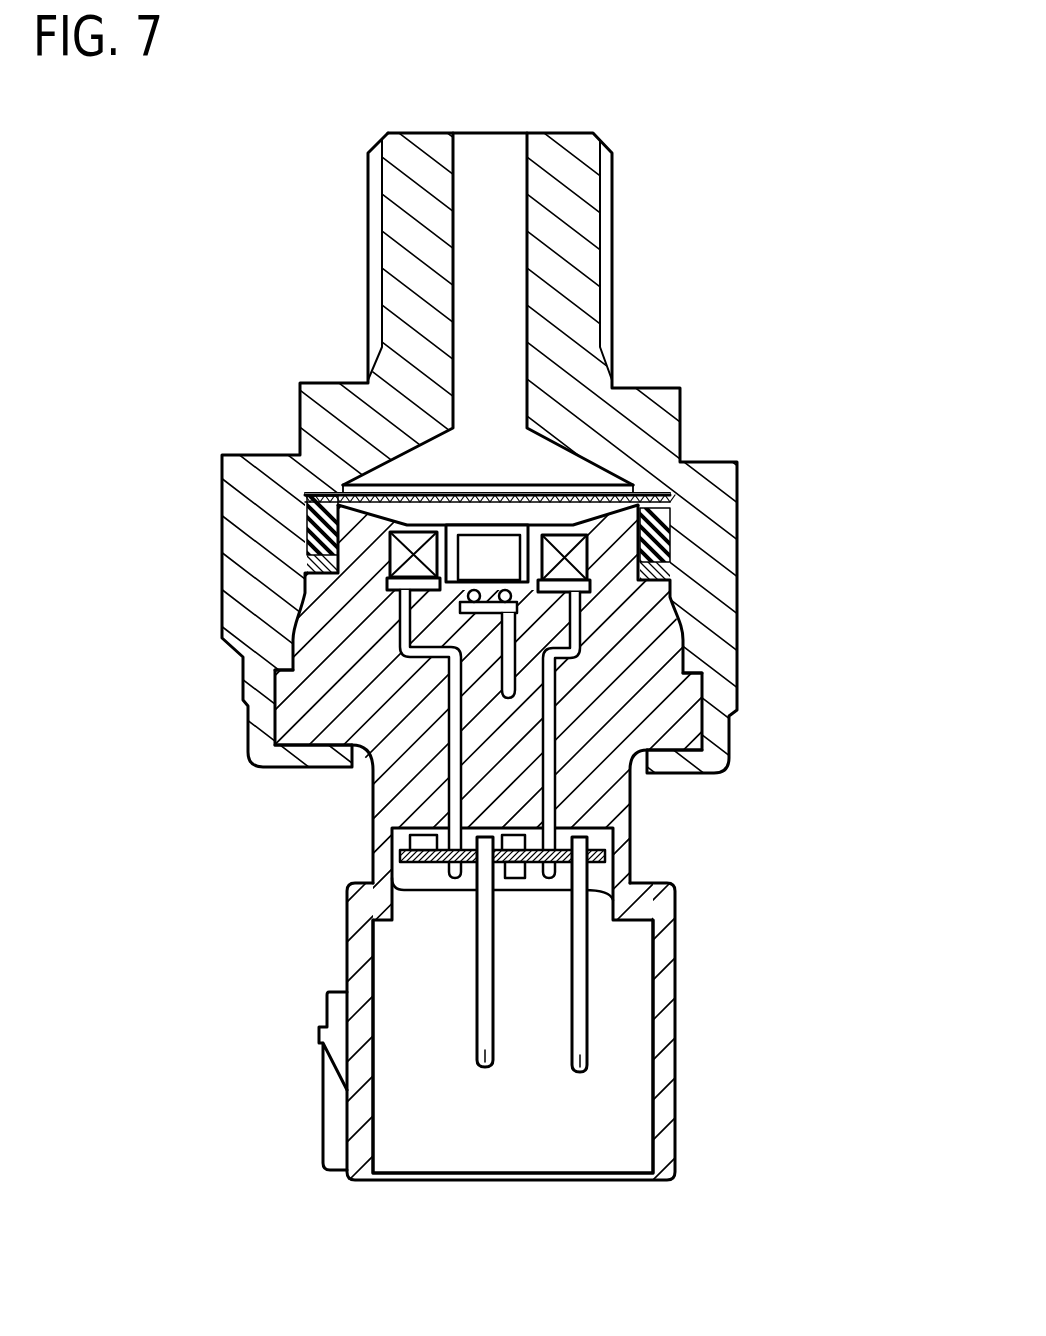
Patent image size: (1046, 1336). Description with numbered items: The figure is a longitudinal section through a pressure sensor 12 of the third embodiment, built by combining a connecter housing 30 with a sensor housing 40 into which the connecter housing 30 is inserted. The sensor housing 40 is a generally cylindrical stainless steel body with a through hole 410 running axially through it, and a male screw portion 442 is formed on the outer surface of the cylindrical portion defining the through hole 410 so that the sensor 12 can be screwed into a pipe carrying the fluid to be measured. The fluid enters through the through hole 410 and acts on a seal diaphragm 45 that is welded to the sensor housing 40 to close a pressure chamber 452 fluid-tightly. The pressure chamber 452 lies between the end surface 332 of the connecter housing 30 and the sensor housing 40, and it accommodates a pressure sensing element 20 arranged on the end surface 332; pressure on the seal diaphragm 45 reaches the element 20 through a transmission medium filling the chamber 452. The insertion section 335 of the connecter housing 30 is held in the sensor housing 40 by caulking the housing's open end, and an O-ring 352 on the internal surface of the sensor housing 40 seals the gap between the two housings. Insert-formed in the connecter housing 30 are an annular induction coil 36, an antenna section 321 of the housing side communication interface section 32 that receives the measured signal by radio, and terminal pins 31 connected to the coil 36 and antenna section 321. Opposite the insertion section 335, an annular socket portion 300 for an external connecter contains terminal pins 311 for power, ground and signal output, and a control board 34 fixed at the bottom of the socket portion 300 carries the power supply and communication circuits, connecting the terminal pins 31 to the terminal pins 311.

The pressure sensor 12 is at (663, 135).
The through hole 410 is at (488, 182).
The male screw portion 442 is at (608, 247).
The sensor housing 40 is at (608, 340).
The seal diaphragm 45 is at (485, 512).
The end surface 332 is at (513, 517).
The pressure chamber 452 is at (512, 500).
The O-ring 352 is at (653, 543).
The pressure sensing element 20 is at (420, 555).
The annular induction coil 36 is at (575, 558).
The insertion section 335 is at (343, 632).
The antenna section 321 is at (420, 657).
The terminal pins 31 is at (547, 785).
The connecter housing 30 is at (670, 732).
The housing side communication interface section 32 is at (487, 620).
The control board 34 is at (593, 862).
The socket portion 300 is at (683, 1047).
The terminal pins 311 is at (580, 1075).